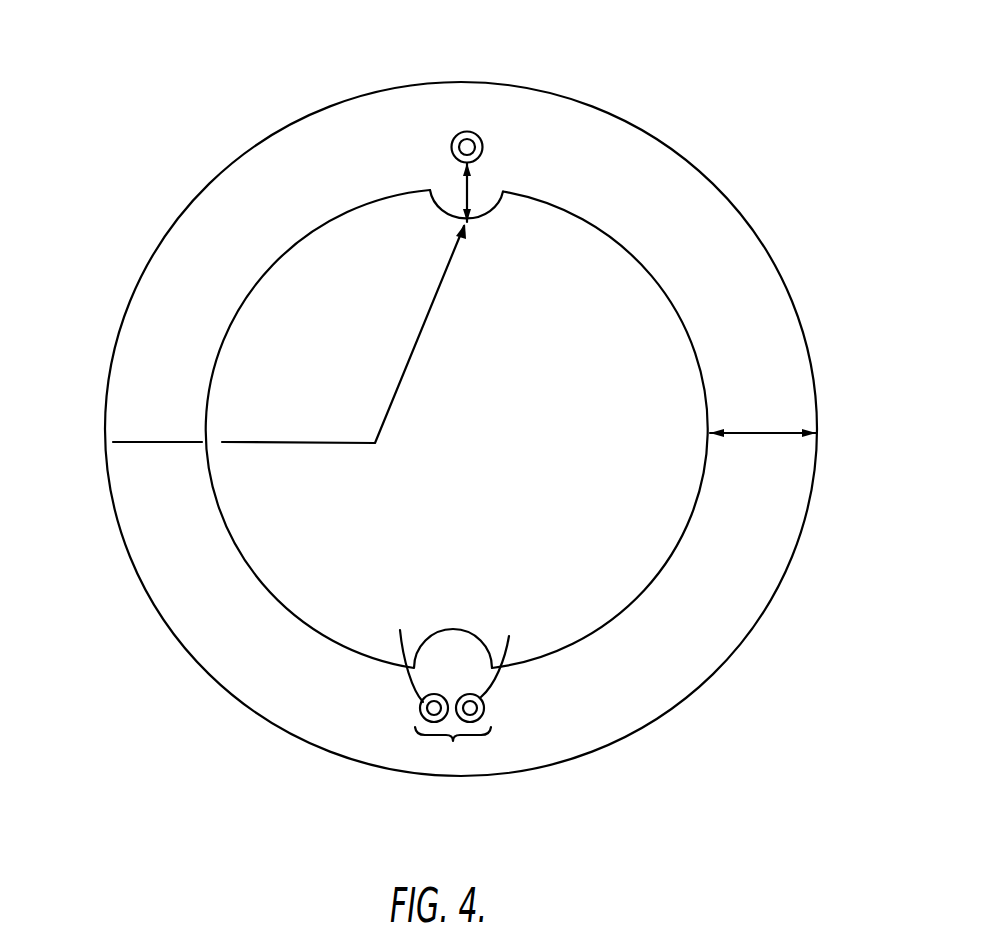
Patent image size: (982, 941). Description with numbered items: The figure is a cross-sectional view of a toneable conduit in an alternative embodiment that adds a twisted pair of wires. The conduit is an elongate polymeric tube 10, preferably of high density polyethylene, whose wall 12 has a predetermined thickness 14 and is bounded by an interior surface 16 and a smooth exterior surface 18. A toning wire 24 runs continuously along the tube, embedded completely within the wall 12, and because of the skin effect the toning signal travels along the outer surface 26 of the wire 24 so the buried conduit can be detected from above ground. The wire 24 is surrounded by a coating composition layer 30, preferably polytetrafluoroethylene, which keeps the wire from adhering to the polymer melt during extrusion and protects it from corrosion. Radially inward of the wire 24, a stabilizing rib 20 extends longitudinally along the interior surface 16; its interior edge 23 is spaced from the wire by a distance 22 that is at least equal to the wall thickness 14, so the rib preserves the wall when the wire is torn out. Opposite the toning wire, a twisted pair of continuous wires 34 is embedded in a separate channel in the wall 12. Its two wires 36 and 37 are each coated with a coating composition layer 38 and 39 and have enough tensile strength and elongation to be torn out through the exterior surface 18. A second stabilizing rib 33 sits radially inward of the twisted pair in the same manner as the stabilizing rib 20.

The elongate polymeric tube 10 is at (728, 193).
The wall 12 is at (776, 490).
The predetermined thickness 14 is at (765, 432).
The interior surface 16 is at (682, 313).
The exterior surface 18 is at (185, 653).
The stabilizing rib 20 is at (496, 219).
The distance 22 is at (440, 210).
The interior edge 23 is at (93, 442).
The wire 24 is at (482, 142).
The outer surface 26 is at (460, 122).
The coating composition layer 30 is at (452, 147).
The stabilizing rib 33 is at (457, 656).
The twisted pair of continuous wires 34 is at (453, 741).
The continuous wire 36 is at (422, 713).
The continuous wire 37 is at (483, 713).
The coating composition layer 38 is at (404, 648).
The coating composition layer 39 is at (504, 650).